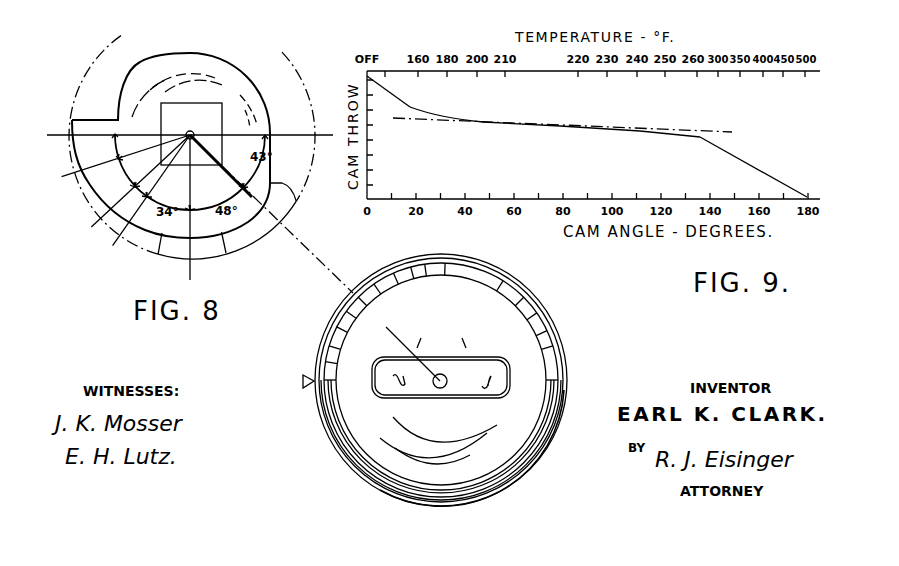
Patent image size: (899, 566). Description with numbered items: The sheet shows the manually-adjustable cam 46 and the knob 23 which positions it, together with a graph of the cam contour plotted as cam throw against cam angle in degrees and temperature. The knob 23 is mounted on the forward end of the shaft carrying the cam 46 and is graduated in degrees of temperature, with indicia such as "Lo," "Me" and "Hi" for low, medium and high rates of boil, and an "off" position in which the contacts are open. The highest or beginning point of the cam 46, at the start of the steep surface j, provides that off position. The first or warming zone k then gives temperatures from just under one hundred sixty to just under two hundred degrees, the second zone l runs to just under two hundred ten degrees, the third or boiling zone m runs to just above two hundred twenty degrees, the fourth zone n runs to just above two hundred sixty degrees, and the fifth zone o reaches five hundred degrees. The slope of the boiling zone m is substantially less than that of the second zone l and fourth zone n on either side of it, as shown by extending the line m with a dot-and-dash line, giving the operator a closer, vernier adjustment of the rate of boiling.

In FIG. 8, the manually-adjustable cam 46 is at (208, 68).
In FIG. 8, the knob 23 is at (542, 332).
In FIG. 8, the steep surface j is at (78, 148).
In FIG. 9, the steep surface j is at (397, 101).
In FIG. 8, the first or warming zone k is at (88, 190).
In FIG. 9, the first or warming zone k is at (447, 115).
In FIG. 8, the second zone l is at (114, 238).
In FIG. 9, the second zone l is at (488, 121).
In FIG. 8, the third or boiling zone m is at (160, 252).
In FIG. 9, the third or boiling zone m is at (540, 125).
In FIG. 8, the fourth zone n is at (226, 252).
In FIG. 9, the fourth zone n is at (655, 134).
In FIG. 8, the fifth zone o is at (296, 193).
In FIG. 9, the fifth zone o is at (752, 167).